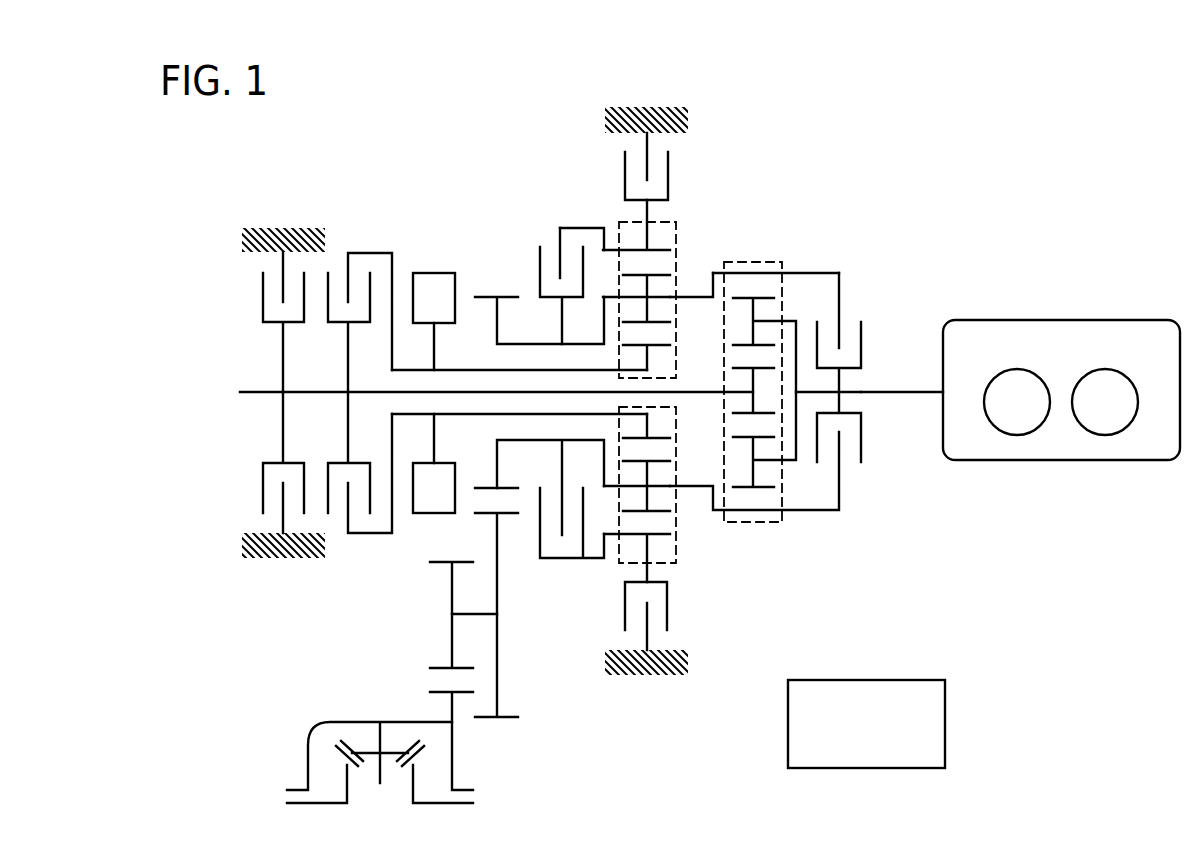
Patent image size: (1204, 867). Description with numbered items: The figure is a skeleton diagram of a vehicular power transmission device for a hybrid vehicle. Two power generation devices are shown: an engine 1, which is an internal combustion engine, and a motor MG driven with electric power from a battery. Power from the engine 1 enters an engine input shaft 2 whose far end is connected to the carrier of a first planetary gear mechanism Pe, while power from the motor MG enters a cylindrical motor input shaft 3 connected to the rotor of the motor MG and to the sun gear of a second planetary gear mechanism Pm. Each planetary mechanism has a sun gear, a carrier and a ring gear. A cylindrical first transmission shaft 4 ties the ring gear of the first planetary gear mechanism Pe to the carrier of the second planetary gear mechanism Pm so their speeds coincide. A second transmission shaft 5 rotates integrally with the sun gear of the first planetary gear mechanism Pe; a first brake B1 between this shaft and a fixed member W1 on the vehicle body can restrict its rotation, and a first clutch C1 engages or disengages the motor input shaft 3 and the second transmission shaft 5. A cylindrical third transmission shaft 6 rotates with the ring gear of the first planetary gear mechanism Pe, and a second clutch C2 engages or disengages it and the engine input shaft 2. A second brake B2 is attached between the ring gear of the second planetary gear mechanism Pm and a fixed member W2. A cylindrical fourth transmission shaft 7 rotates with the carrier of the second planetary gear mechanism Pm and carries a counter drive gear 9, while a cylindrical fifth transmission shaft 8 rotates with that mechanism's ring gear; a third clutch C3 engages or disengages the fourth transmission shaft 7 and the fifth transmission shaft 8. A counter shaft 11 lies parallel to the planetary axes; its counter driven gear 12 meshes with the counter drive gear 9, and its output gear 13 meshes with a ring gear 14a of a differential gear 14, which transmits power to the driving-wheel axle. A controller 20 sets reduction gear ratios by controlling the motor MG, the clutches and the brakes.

The engine 1 is at (1040, 320).
The engine input shaft 2 is at (915, 390).
The motor input shaft 3 is at (470, 369).
The first transmission shaft 4 is at (696, 297).
The second transmission shaft 5 is at (688, 391).
The third transmission shaft 6 is at (823, 273).
The fourth transmission shaft 7 is at (528, 343).
The fifth transmission shaft 8 is at (592, 227).
The counter drive gear 9 is at (487, 296).
The counter shaft 11 is at (485, 614).
The counter driven gear 12 is at (500, 668).
The output gear 13 is at (452, 646).
The differential gear 14 is at (346, 698).
The ring gear 14a is at (453, 752).
The controller 20 is at (898, 680).
The motor MG is at (432, 273).
The second planetary gear mechanism Pm is at (676, 222).
The first planetary gear mechanism Pe is at (778, 262).
The fixed member W1 is at (293, 236).
The fixed member W2 is at (657, 116).
The first brake B1 is at (262, 497).
The second brake B2 is at (667, 614).
The first clutch C1 is at (328, 490).
The second clutch C2 is at (861, 326).
The third clutch C3 is at (540, 535).